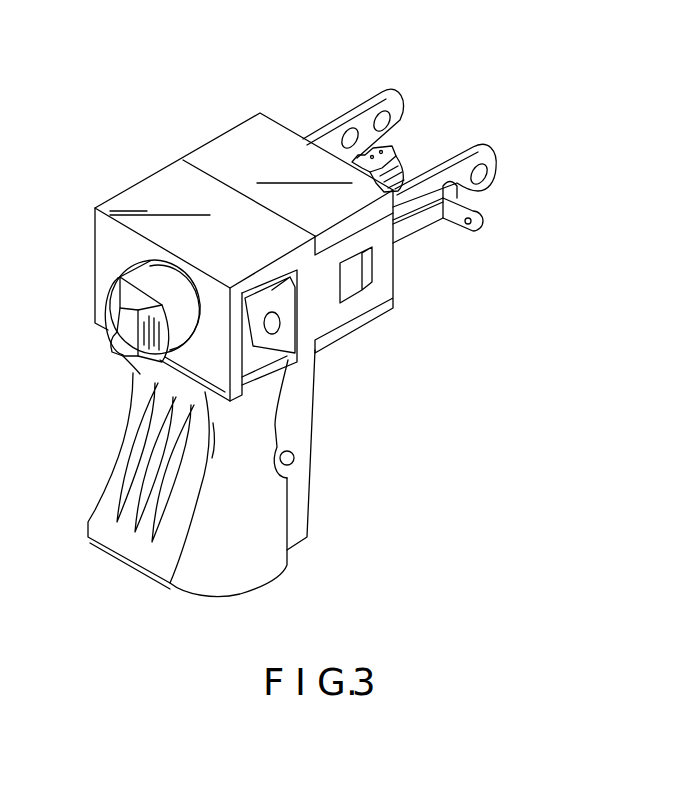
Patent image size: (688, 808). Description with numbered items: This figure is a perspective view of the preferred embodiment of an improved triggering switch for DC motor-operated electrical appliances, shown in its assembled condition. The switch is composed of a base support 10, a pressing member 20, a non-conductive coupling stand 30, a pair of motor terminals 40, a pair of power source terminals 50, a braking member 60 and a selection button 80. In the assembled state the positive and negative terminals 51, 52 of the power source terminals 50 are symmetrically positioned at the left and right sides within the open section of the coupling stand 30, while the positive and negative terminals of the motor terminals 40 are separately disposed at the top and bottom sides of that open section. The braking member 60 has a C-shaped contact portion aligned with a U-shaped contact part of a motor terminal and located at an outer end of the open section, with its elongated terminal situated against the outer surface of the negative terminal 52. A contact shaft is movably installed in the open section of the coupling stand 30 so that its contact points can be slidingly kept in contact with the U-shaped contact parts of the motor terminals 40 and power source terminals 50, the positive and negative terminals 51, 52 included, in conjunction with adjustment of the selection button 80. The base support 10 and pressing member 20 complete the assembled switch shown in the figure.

The base support 10 is at (305, 412).
The pressing member 20 is at (263, 560).
The non-conductive coupling stand 30 is at (240, 138).
The motor terminals 40 is at (390, 152).
The power source terminals 50 is at (548, 90).
The positive terminal 51 is at (365, 117).
The negative terminal 52 is at (493, 148).
The braking member 60 is at (418, 225).
The selection button 80 is at (110, 354).